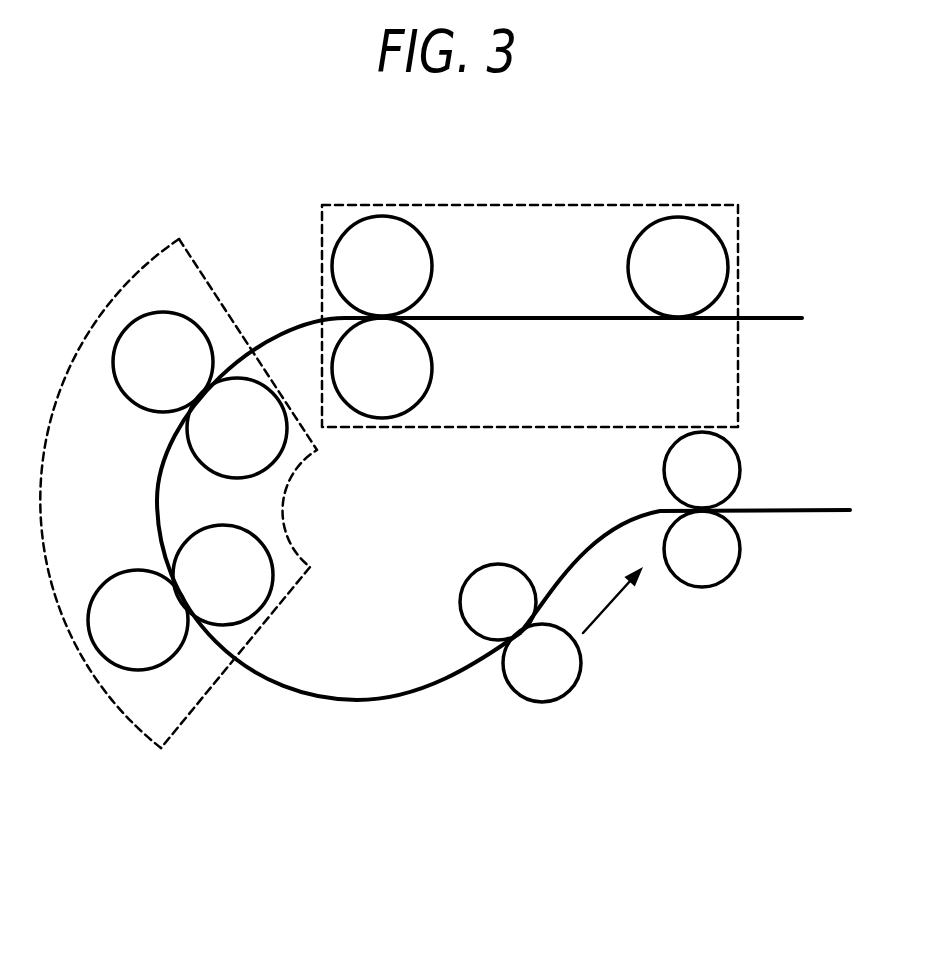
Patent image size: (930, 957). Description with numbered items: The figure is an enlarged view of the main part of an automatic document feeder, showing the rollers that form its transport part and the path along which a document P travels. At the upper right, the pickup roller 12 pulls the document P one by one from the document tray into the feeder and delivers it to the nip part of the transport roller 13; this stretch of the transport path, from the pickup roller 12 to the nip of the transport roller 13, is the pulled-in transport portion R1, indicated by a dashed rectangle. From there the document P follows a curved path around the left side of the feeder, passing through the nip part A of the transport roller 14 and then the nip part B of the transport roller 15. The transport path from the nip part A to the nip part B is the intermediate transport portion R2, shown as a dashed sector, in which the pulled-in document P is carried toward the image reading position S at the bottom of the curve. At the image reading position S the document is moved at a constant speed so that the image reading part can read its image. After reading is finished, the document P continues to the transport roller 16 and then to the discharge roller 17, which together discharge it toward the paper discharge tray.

The pickup roller 12 is at (633, 268).
The transport roller 13 is at (428, 260).
The transport roller 14 is at (138, 396).
The transport roller 15 is at (127, 596).
The transport roller 16 is at (478, 592).
The discharge roller 17 is at (737, 470).
The pulled-in transport portion R1 is at (740, 222).
The intermediate transport portion R2 is at (127, 290).
The document P is at (595, 547).
The image reading position S is at (493, 708).
The nip part A is at (248, 370).
The nip part B is at (193, 652).